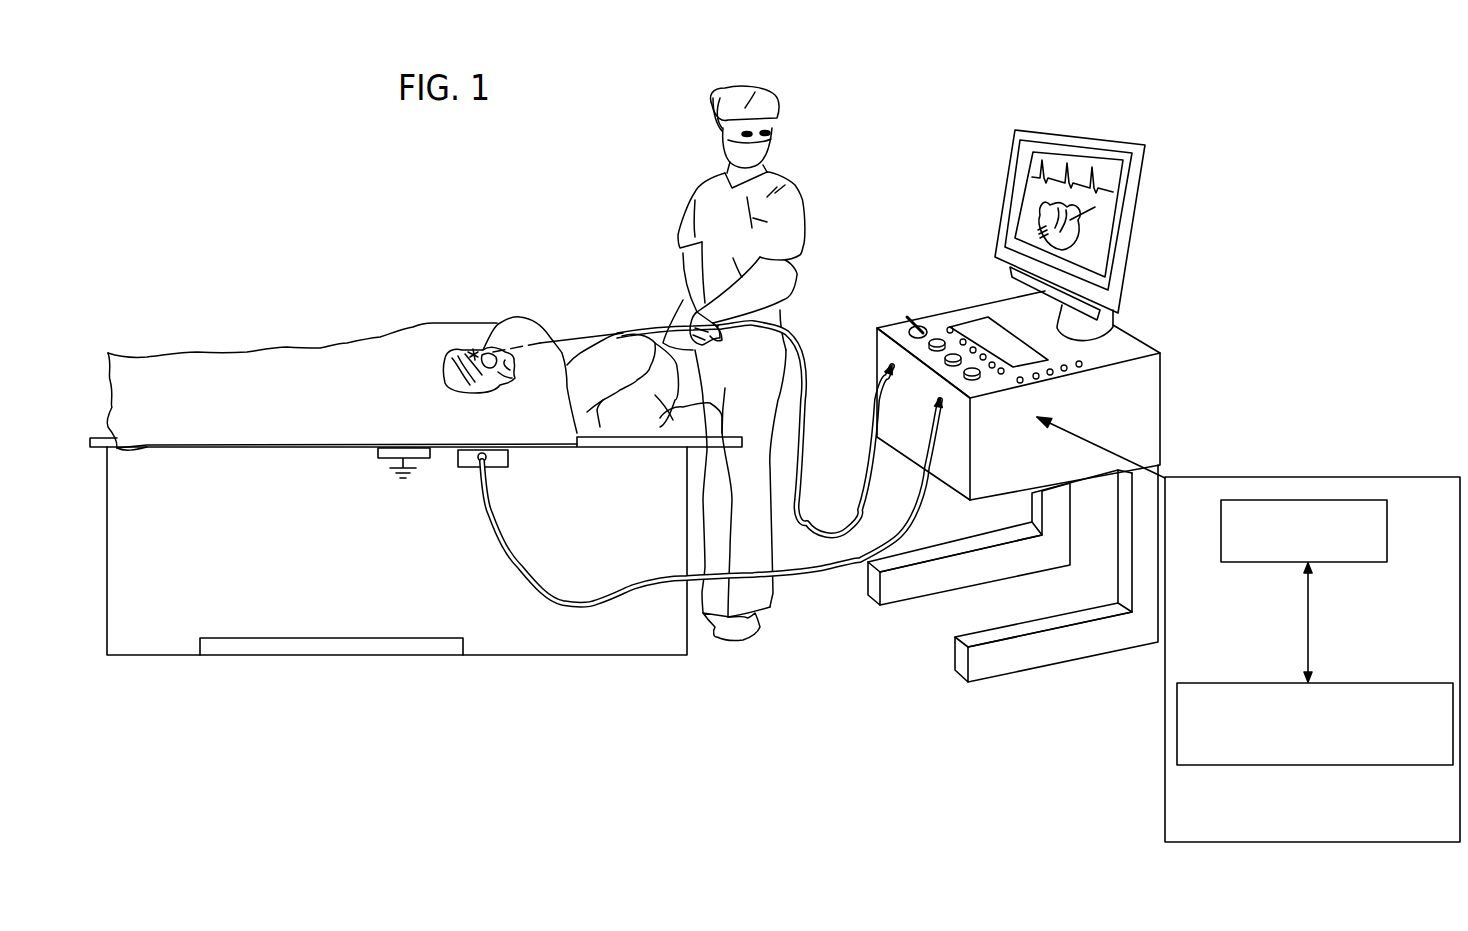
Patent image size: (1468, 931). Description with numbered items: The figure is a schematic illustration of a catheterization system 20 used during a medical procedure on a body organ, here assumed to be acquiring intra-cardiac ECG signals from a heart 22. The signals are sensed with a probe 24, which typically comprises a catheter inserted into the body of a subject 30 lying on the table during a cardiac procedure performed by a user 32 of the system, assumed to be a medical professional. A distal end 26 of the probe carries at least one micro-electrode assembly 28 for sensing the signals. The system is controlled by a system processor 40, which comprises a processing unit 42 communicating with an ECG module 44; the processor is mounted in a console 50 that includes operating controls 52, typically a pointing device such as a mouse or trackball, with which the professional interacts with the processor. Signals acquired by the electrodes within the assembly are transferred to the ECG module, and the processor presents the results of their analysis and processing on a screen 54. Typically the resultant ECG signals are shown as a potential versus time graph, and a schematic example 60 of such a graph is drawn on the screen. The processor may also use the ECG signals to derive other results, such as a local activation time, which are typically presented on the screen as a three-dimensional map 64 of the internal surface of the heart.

The catheterization system 20 is at (1030, 102).
The heart 22 is at (492, 350).
The probe 24 is at (797, 347).
The distal end 26 is at (470, 357).
The micro-electrode assembly 28 is at (450, 296).
The subject 30 is at (657, 437).
The user 32 is at (712, 222).
The system processor 40 is at (1212, 843).
The processing unit 42 is at (1228, 500).
The ECG module 44 is at (1177, 722).
The console 50 is at (957, 313).
The operating controls 52 is at (900, 303).
The screen 54 is at (1132, 238).
The schematic example of a potential vs. time graph 60 is at (1032, 177).
The three-dimensional map 64 is at (1037, 232).